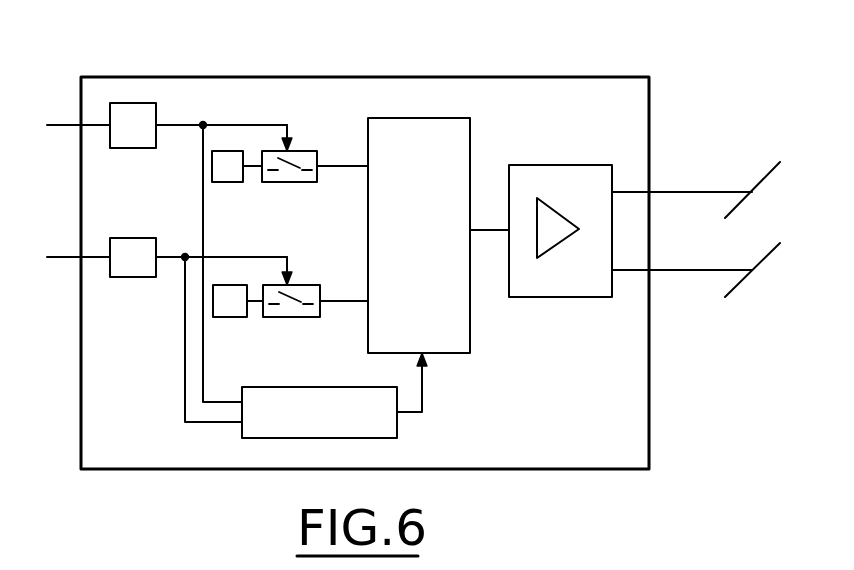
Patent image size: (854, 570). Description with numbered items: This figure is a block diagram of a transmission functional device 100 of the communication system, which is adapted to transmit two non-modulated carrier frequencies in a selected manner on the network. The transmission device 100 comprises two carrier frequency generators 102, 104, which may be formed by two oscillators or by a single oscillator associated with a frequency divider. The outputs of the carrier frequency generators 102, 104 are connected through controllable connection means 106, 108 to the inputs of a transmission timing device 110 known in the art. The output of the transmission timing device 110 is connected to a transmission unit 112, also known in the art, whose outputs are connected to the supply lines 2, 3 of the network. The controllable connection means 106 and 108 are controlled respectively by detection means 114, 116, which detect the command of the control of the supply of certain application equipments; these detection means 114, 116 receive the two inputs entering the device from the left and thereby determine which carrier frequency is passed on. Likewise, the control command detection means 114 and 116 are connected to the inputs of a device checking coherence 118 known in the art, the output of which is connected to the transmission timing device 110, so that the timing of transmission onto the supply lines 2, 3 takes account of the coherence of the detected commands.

The supply line 2 is at (770, 172).
The supply line 3 is at (772, 253).
The transmission functional device 100 is at (530, 77).
The carrier frequency generator 102 is at (228, 182).
The carrier frequency generator 104 is at (228, 317).
The controllable connection means 106 is at (290, 182).
The controllable connection means 108 is at (290, 317).
The transmission timing device 110 is at (472, 327).
The transmission unit 112 is at (540, 166).
The detection means 114 is at (132, 103).
The detection means 116 is at (130, 277).
The device checking coherence 118 is at (345, 438).